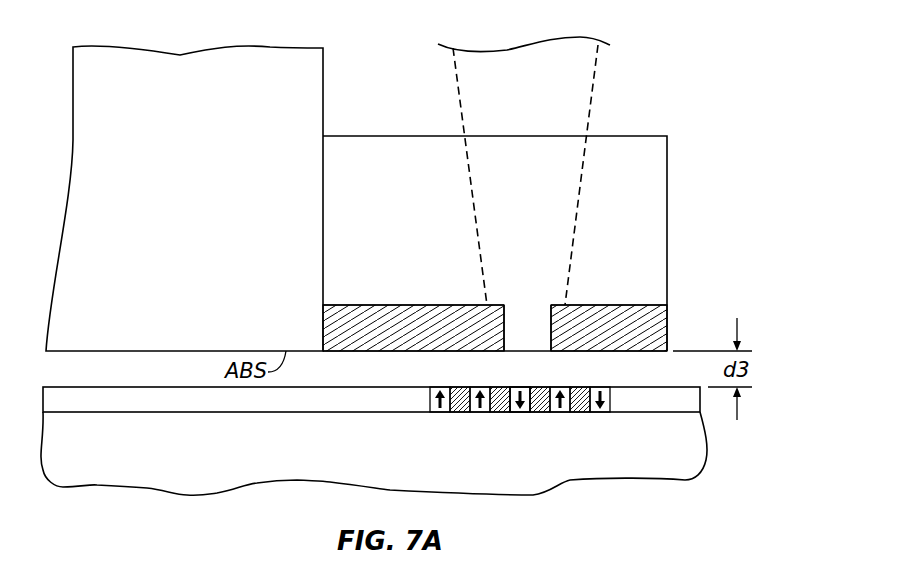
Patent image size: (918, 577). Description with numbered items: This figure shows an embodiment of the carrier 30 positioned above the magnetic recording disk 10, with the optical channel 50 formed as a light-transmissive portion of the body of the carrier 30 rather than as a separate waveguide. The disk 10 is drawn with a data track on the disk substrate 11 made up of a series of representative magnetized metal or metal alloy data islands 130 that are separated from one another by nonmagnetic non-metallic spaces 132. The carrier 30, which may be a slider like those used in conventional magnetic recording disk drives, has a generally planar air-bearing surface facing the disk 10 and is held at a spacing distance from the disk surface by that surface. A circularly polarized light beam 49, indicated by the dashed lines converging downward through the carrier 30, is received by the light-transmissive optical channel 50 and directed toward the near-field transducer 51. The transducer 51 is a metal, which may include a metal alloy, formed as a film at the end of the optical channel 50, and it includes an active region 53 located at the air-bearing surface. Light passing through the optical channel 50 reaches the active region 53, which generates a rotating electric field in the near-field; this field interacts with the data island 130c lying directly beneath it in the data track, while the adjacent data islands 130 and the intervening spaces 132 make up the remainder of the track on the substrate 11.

The disk 10 is at (404, 451).
The disk substrate 11 is at (698, 458).
The carrier 30 is at (703, 114).
The circularly polarized light beam 49 is at (585, 100).
The optical channel 50 is at (653, 205).
The near-field transducer 51 is at (655, 320).
The active region 53 is at (511, 312).
The data islands 130 is at (475, 387).
The data island 130c is at (518, 412).
The nonmagnetic non-metallic spaces 132 is at (497, 412).